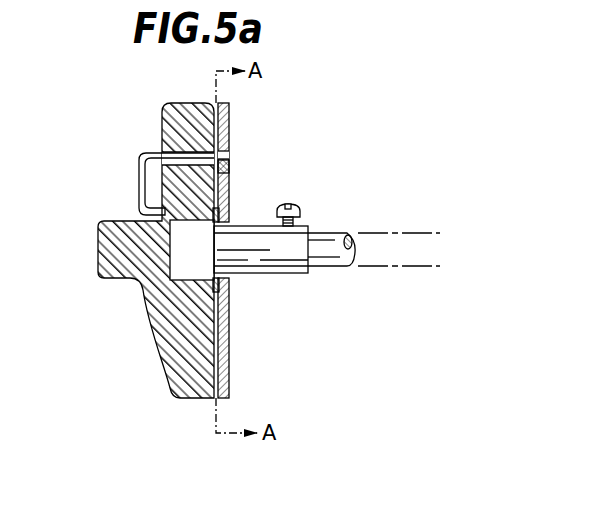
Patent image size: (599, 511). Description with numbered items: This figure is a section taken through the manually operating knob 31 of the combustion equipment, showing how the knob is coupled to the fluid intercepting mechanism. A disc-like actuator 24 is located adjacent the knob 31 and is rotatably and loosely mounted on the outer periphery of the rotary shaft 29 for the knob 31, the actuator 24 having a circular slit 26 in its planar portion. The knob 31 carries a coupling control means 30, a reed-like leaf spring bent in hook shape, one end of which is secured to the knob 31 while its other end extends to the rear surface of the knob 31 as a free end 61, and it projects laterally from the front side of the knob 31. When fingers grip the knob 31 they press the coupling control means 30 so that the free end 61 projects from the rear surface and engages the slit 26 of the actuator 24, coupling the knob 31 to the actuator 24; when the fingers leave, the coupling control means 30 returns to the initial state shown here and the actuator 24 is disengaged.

The actuator 24 is at (225, 366).
The circular slit 26 is at (223, 155).
The rotary shaft 29 is at (292, 267).
The coupling control means 30 is at (140, 190).
The manually operating knob 31 is at (137, 280).
The free end 61 is at (222, 168).